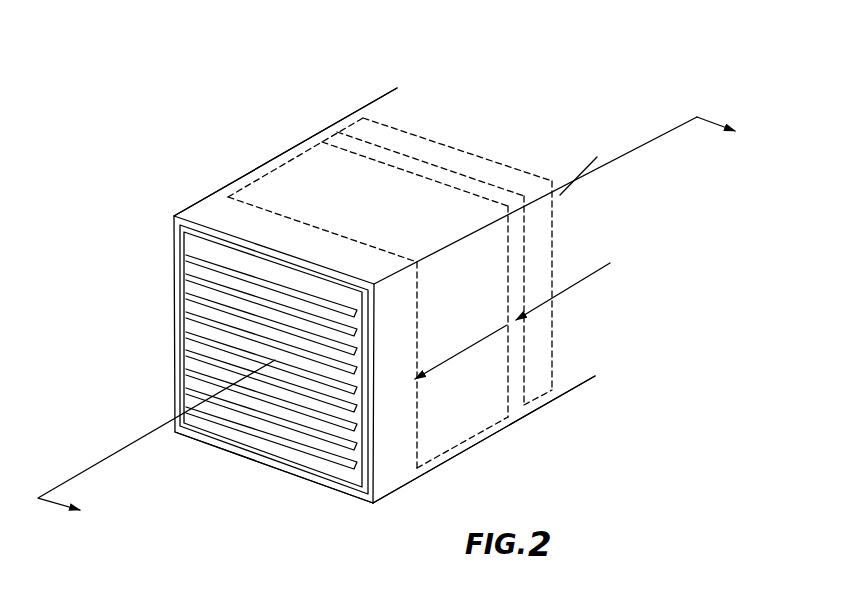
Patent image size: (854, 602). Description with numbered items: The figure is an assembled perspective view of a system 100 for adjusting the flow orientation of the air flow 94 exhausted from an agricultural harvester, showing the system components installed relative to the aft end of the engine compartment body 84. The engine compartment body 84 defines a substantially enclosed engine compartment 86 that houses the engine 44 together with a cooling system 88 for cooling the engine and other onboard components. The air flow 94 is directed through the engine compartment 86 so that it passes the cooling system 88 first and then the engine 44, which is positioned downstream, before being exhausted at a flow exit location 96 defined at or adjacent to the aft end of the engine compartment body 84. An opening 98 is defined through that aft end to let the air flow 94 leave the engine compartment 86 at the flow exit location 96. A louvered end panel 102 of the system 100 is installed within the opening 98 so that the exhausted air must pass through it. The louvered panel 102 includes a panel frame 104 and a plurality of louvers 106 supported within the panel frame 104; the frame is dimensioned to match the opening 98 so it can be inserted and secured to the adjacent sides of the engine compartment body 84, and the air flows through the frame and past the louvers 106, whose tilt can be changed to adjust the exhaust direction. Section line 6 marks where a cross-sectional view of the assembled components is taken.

The system for adjusting the flow orientation of an air flow 100 is at (155, 89).
The engine compartment body 84 is at (194, 205).
The engine compartment 86 is at (387, 116).
The cooling system 88 is at (547, 393).
The air flow 94 is at (462, 350).
The flow exit location 96 is at (156, 272).
The opening 98 is at (285, 461).
The louvered panel 102 is at (354, 499).
The panel frame 104 is at (369, 470).
The louvers 106 is at (275, 360).
The engine 44 is at (470, 423).
The section line 6- 6 is at (396, 324).